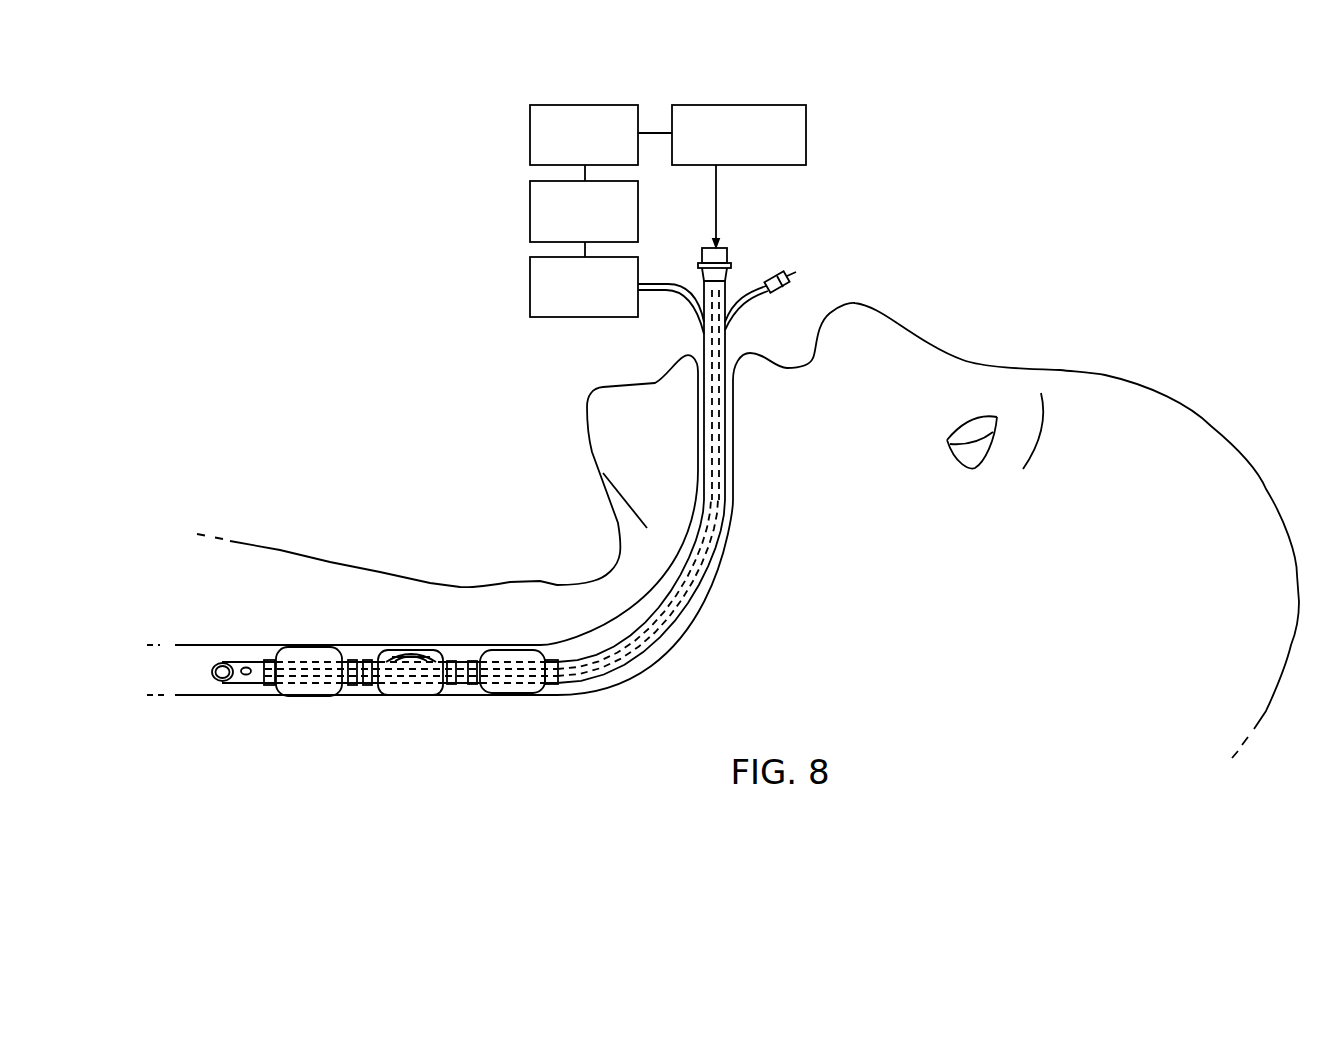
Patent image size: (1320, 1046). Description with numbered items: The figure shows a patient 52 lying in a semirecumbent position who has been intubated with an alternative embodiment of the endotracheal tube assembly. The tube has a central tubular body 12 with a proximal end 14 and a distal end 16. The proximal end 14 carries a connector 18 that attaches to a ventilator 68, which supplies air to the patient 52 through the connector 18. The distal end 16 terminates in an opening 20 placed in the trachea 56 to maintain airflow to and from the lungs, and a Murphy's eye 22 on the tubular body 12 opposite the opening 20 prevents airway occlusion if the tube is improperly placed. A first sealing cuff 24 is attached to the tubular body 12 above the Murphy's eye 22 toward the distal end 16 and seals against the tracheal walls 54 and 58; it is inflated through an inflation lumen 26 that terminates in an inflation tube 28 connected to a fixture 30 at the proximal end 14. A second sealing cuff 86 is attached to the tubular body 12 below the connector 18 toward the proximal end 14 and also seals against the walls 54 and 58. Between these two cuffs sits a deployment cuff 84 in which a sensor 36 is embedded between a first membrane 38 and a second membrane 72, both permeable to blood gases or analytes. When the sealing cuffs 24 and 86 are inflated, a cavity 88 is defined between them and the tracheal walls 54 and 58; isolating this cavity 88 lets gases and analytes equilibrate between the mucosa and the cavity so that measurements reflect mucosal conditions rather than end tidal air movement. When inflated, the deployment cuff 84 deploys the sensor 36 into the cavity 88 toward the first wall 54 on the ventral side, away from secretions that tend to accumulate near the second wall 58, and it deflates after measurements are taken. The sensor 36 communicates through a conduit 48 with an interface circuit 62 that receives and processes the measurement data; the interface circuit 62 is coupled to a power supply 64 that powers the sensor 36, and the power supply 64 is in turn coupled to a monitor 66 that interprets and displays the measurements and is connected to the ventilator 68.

The tubular body 12 is at (661, 633).
The proximal end 14 is at (758, 266).
The distal end 16 is at (218, 660).
The connector 18 is at (729, 266).
The opening 20 is at (222, 681).
The Murphy's eye 22 is at (246, 676).
The sealing cuff 24 is at (297, 647).
The inflation lumen 26 is at (724, 353).
The inflation tube 28 is at (744, 300).
The fixture 30 is at (789, 282).
The sensor 36 is at (410, 648).
The first membrane 38 is at (400, 650).
The conduit 48 is at (673, 296).
The patient 52 is at (1110, 376).
The first wall of the trachea 54 is at (375, 648).
The trachea 56 is at (202, 671).
The second wall of the trachea 58 is at (360, 700).
The interface circuit 62 is at (530, 289).
The power supply 64 is at (530, 213).
The monitor 66 is at (530, 137).
The ventilator 68 is at (807, 137).
The second membrane 72 is at (408, 664).
The deployment cuff 84 is at (445, 692).
The second sealing cuff 86 is at (530, 642).
The cavity 88 is at (353, 650).